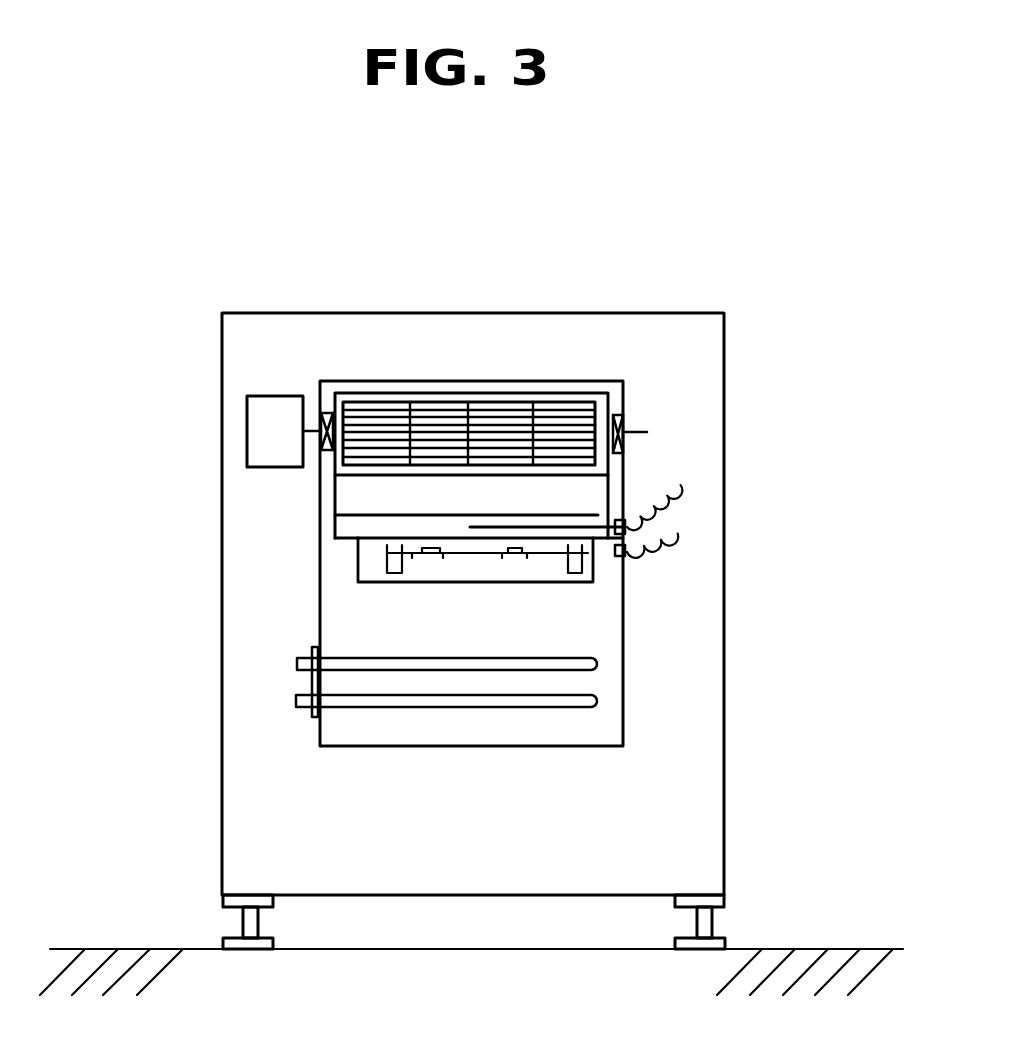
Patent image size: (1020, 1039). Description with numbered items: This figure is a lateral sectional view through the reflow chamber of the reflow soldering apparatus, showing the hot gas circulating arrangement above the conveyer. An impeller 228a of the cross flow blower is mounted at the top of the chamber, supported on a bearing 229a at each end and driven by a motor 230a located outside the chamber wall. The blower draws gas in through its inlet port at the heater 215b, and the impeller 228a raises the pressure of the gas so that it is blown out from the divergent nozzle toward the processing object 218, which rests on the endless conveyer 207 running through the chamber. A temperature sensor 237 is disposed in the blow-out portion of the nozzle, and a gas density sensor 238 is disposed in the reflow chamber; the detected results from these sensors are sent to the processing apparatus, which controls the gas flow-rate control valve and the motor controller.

The motor 230a is at (268, 396).
The bearing 229a is at (327, 413).
The impeller 228a is at (447, 407).
The temperature sensor 237 is at (562, 520).
The endless conveyer 207 is at (387, 553).
The processing object 218 is at (547, 553).
The gas density sensor 238 is at (600, 549).
The heater 215b is at (502, 705).